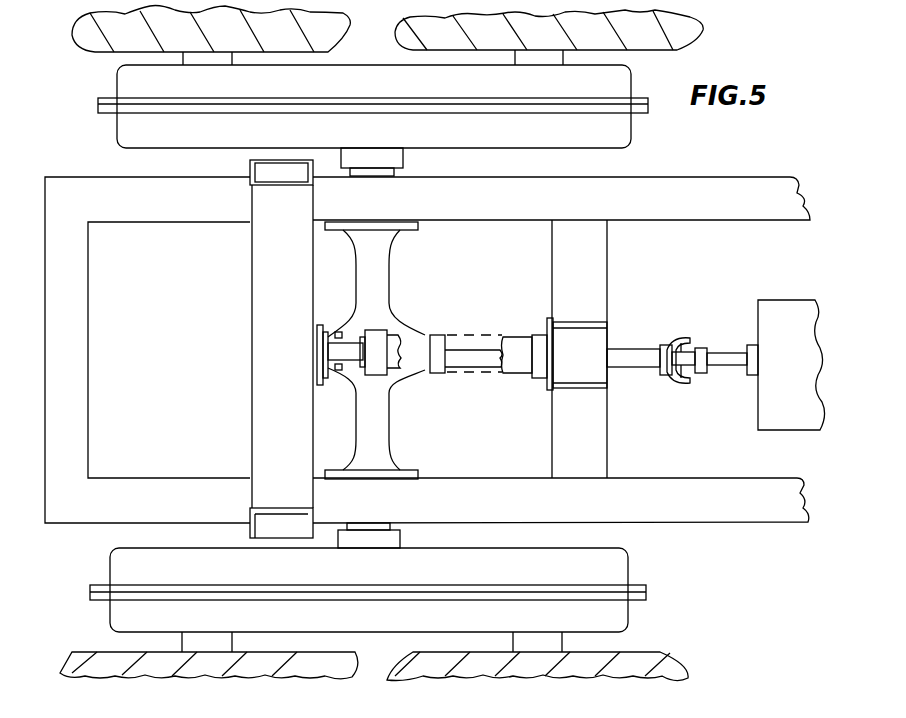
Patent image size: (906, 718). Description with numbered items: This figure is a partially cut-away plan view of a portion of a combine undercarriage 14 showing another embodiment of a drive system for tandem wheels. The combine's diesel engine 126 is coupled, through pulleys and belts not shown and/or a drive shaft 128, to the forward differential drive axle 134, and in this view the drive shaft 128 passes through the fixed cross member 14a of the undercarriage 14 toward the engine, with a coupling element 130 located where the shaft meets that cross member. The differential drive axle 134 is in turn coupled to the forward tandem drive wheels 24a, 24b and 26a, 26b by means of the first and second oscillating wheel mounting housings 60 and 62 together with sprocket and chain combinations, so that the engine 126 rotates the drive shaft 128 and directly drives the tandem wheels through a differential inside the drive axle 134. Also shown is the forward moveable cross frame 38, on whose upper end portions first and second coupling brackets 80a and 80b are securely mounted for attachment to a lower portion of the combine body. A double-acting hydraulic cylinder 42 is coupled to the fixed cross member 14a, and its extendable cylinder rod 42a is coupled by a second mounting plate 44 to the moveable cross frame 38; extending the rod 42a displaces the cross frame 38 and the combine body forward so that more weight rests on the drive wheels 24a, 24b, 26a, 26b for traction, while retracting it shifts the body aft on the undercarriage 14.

The undercarriage 14 is at (690, 177).
The fixed cross member 14a is at (588, 267).
The tandem drive wheel 24a is at (72, 658).
The tandem drive wheel 24b is at (662, 660).
The tandem drive wheel 26a is at (88, 30).
The tandem drive wheel 26b is at (682, 38).
The forward moveable cross frame 38 is at (292, 300).
The hydraulic cylinder 42 is at (380, 335).
The cylinder rod 42a is at (356, 345).
The second mounting plate 44 is at (318, 385).
The first oscillating wheel mounting housing 60 is at (621, 565).
The second oscillating wheel mounting housing 62 is at (632, 126).
The first coupling bracket 80a is at (279, 520).
The second coupling bracket 80b is at (263, 180).
The diesel engine 126 is at (778, 383).
The drive shaft 128 is at (618, 350).
The shaft coupling block 130 is at (550, 322).
The forward differential drive axle 134 is at (383, 426).